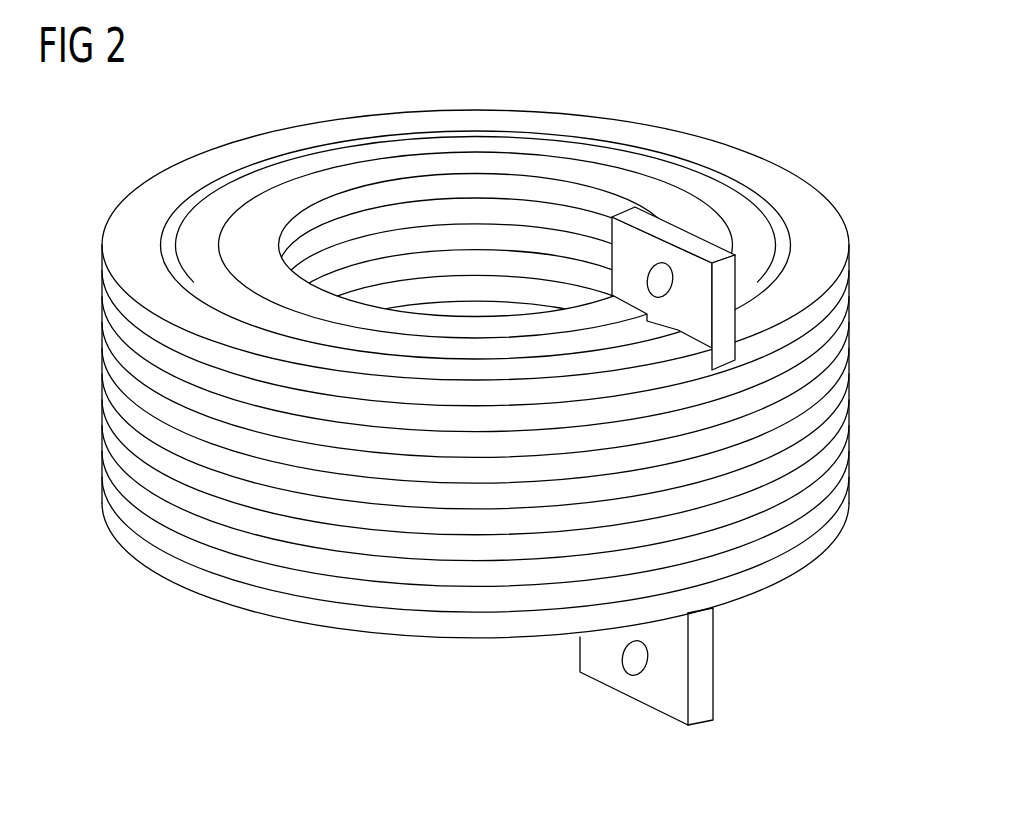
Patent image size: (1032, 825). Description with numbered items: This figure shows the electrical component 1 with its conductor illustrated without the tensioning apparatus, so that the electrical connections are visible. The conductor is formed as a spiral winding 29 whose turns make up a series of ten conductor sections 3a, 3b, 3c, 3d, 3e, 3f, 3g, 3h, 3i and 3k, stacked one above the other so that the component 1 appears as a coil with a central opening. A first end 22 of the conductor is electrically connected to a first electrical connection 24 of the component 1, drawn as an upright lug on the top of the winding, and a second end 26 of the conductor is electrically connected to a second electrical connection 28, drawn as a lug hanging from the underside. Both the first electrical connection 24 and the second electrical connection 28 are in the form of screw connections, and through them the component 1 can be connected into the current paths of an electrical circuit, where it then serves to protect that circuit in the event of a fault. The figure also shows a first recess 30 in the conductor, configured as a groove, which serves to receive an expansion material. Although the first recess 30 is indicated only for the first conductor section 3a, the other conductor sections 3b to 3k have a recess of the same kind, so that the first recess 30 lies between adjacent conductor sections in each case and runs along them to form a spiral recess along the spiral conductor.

The component 1 is at (810, 140).
The first conductor section 3a is at (837, 313).
The conductor section 3b is at (837, 340).
The conductor section 3c is at (837, 368).
The conductor section 3d is at (837, 395).
The conductor section 3e is at (837, 423).
The conductor section 3f is at (837, 450).
The conductor section 3g is at (837, 478).
The conductor section 3h is at (837, 505).
The conductor section 3i is at (837, 533).
The conductor section 3k is at (837, 561).
The first end 22 is at (576, 325).
The first electrical connection 24 is at (688, 272).
The second end 26 is at (732, 615).
The second electrical connection 28 is at (703, 705).
The spiral winding 29 is at (88, 245).
The first recess 30 is at (268, 180).